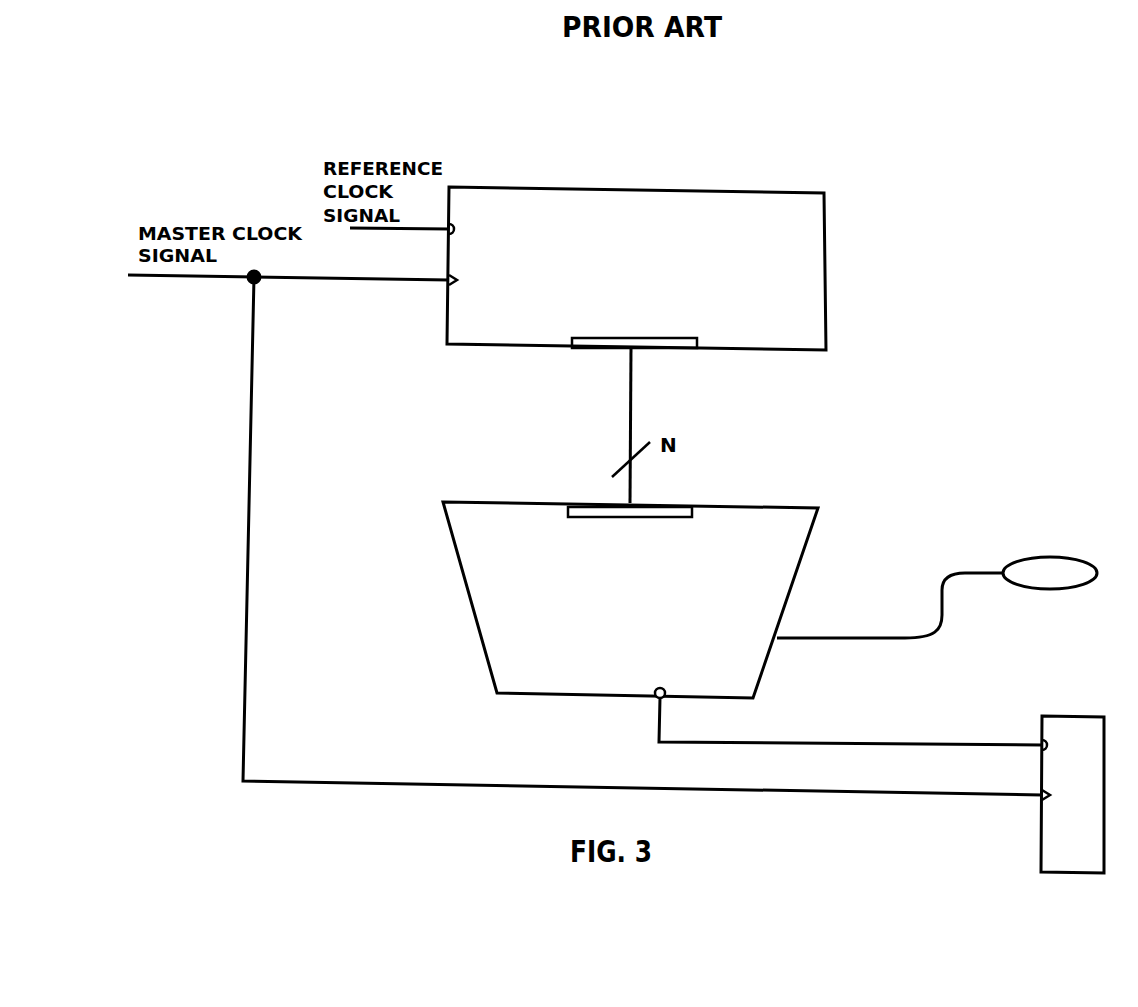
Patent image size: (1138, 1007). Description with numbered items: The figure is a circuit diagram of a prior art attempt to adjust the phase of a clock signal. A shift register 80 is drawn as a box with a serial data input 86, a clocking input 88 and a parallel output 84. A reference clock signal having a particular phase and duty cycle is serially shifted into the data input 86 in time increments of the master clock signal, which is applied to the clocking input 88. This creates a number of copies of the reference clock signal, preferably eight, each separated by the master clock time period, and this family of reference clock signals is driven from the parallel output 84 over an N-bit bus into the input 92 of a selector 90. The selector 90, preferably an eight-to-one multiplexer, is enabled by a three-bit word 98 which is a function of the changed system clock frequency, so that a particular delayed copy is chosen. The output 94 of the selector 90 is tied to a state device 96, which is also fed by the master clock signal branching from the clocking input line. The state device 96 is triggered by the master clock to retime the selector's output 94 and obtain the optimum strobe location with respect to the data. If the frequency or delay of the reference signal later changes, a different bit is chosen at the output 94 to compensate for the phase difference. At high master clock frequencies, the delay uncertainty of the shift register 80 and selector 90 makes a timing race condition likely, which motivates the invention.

The shift register 80 is at (826, 247).
The parallel output 84 is at (660, 338).
The serial data input 86 is at (456, 229).
The clocking input 88 is at (457, 282).
The selector 90 is at (795, 582).
The input 92 is at (672, 517).
The output 94 is at (659, 687).
The state device 96 is at (1075, 716).
The 3-bit word 98 is at (1053, 557).